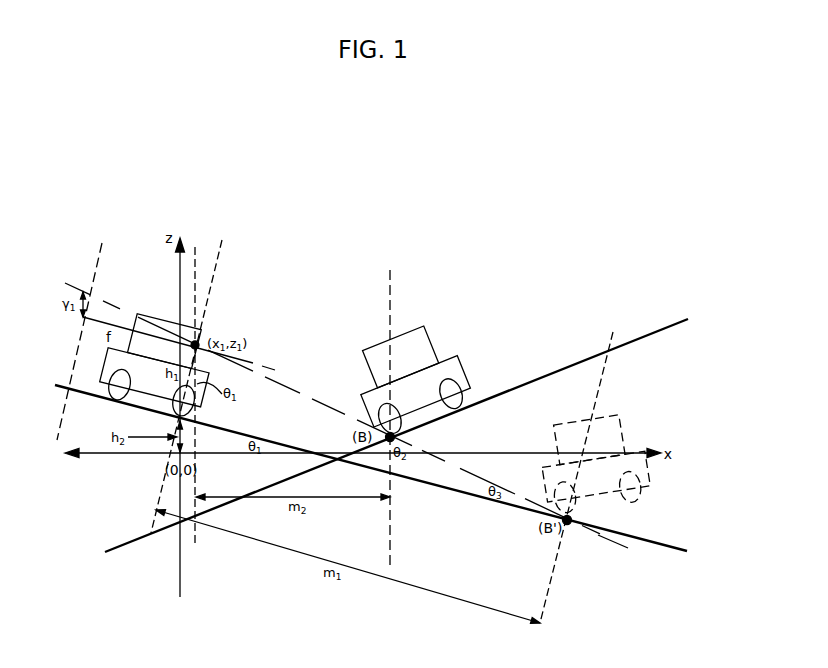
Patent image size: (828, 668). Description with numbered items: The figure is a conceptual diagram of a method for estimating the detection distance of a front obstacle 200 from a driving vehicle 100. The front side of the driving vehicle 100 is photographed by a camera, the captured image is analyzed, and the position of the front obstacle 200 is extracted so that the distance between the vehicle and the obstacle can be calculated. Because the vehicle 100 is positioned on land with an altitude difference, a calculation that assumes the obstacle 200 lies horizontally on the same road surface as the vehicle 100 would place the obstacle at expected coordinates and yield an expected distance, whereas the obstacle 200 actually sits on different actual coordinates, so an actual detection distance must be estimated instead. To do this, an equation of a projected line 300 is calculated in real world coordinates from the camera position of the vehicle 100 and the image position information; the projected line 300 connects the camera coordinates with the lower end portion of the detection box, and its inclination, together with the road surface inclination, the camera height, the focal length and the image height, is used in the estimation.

The driving vehicle 100 is at (155, 312).
The front obstacle 200 is at (412, 322).
The projected line 300 is at (627, 549).